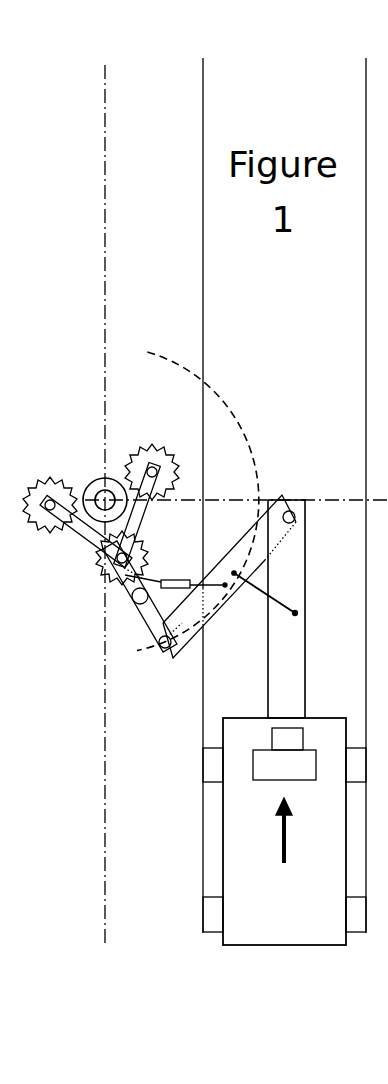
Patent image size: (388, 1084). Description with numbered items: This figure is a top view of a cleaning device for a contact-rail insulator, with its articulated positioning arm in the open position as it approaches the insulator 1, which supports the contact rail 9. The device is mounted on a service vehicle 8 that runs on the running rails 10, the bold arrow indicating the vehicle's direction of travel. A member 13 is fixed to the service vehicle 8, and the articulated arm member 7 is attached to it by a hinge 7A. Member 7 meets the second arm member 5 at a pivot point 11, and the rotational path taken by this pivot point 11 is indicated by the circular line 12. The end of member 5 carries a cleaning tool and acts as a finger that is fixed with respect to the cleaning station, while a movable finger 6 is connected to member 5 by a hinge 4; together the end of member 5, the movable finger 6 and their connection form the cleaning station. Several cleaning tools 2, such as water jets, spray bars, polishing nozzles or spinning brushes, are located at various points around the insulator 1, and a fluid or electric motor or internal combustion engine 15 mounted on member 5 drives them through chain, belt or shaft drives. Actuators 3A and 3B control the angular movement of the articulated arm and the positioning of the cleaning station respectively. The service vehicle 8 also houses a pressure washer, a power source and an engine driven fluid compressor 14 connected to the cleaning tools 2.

The insulator 1 is at (100, 466).
The cleaning tools 2 is at (152, 440).
The actuator 3A is at (254, 599).
The actuator 3B is at (194, 581).
The hinge 4 is at (128, 558).
The member 5 is at (80, 547).
The movable finger 6 is at (148, 523).
The member 7 is at (209, 632).
The hinge 7A is at (291, 504).
The service vehicle 8 is at (221, 848).
The contact rail 9 is at (99, 244).
The running rails 10 is at (364, 297).
The pivot point 11 is at (163, 655).
The circular line 12 is at (239, 414).
The member 13 is at (308, 648).
The fluid compressor 14 is at (250, 764).
The motor or engine 15 is at (127, 615).